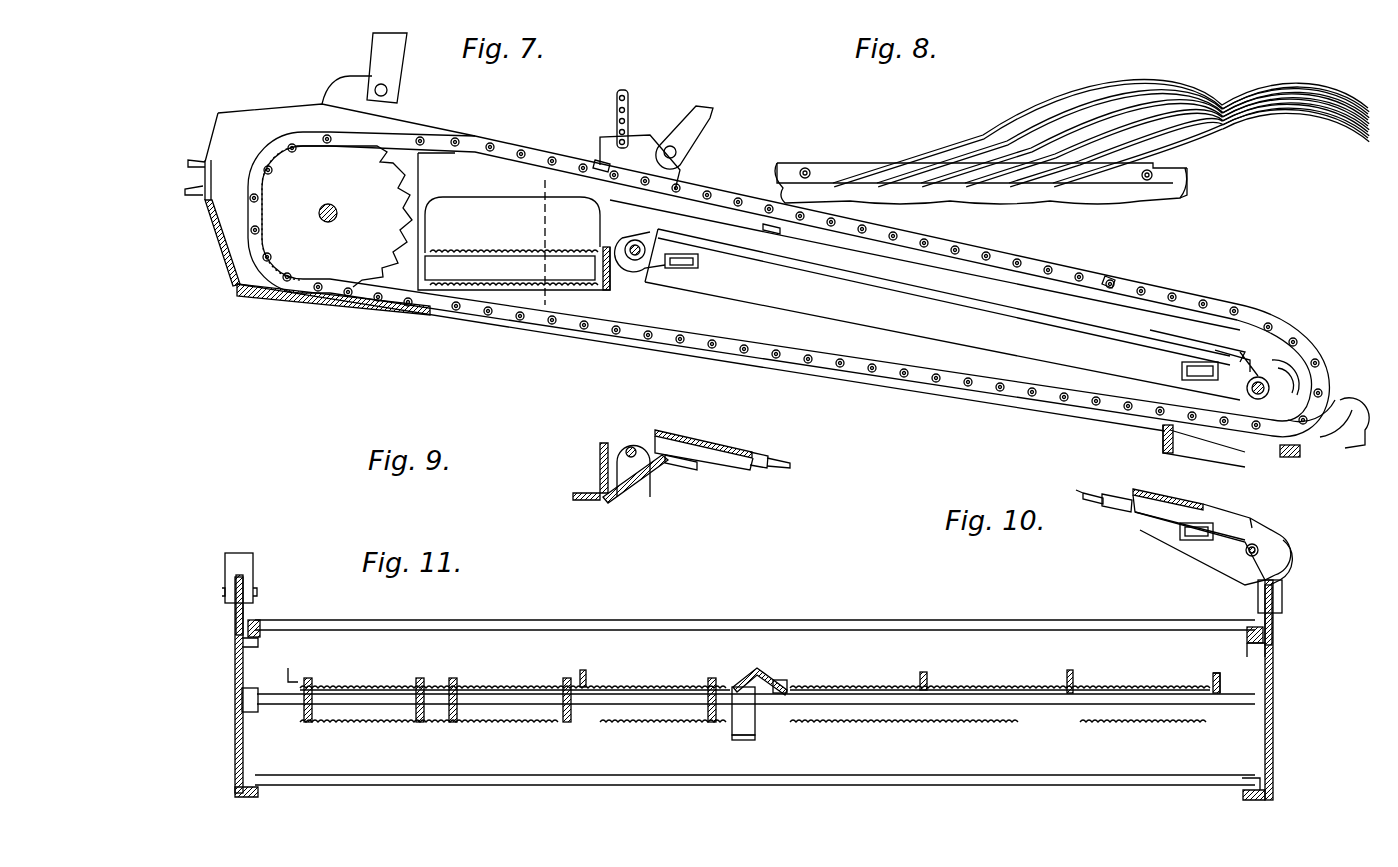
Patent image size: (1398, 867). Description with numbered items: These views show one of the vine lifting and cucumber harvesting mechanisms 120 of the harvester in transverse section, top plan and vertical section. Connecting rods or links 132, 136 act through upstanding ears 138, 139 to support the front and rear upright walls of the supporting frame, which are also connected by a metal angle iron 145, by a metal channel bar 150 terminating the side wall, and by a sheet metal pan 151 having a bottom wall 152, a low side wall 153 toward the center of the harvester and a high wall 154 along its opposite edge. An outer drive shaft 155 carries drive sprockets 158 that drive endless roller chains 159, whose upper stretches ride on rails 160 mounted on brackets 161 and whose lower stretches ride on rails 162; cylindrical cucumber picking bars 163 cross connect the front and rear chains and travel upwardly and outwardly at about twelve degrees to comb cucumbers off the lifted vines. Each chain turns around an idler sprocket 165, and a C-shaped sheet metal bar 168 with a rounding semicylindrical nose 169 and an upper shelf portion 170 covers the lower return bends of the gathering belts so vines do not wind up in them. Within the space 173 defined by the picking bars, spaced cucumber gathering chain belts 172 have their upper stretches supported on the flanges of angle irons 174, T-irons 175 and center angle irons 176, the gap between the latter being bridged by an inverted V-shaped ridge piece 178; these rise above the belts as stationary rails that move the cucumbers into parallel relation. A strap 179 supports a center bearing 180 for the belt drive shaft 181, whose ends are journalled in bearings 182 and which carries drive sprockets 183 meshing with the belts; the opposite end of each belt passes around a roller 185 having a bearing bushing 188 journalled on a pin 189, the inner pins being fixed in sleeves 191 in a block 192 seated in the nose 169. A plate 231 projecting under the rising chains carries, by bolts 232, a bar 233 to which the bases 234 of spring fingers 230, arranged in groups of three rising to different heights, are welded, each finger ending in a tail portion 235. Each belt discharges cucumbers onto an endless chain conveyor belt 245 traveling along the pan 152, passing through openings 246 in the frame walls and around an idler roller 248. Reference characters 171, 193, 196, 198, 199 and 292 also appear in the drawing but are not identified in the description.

In FIG. 7, the vine lifting and cucumber harvesting mechanism 120 is at (1190, 282).
In FIG. 8, the vine lifting and cucumber harvesting mechanism 120 is at (1192, 74).
In FIG. 9, the vine lifting and cucumber harvesting mechanism 120 is at (706, 510).
In FIG. 10, the vine lifting and cucumber harvesting mechanism 120 is at (1140, 540).
In FIG. 11, the vine lifting and cucumber harvesting mechanism 120 is at (678, 614).
In FIG. 7, the connecting rod or link 132 is at (705, 120).
In FIG. 7, the connecting rod or link 136 is at (400, 66).
In FIG. 11, the connecting rod or link 136 is at (238, 552).
In FIG. 7, the upstanding ear 138 is at (612, 138).
In FIG. 11, the upstanding ear 138 is at (1275, 620).
In FIG. 7, the upstanding ear 139 is at (350, 72).
In FIG. 7, the metal angle iron 145 is at (612, 285).
In FIG. 9, the metal angle iron 145 is at (598, 468).
In FIG. 7, the metal channel bar 150 is at (208, 173).
In FIG. 7, the sheet metal pan 151 is at (426, 241).
In FIG. 7, the bottom wall 152 is at (490, 260).
In FIG. 7, the low side wall 153 is at (640, 174).
In FIG. 7, the high wall 154 is at (420, 170).
In FIG. 7, the outer drive shaft 155 is at (340, 198).
In FIG. 7, the drive sprocket 158 is at (337, 216).
In FIG. 7, the endless roller chain 159 is at (810, 362).
In FIG. 11, the endless roller chain 159 is at (258, 620).
In FIG. 7, the rail 160 is at (865, 232).
In FIG. 11, the rail 160 is at (270, 632).
In FIG. 7, the bracket 161 is at (506, 170).
In FIG. 11, the bracket 161 is at (246, 645).
In FIG. 7, the rail 162 is at (878, 385).
In FIG. 7, the cylindrical cucumber picking bar 163 is at (518, 148).
In FIG. 11, the cylindrical cucumber picking bar 163 is at (832, 628).
In FIG. 7, the idler sprocket 165 is at (1265, 365).
In FIG. 7, the C-shaped sheet metal bar 168 is at (1300, 372).
In FIG. 10, the C-shaped sheet metal bar 168 is at (1300, 548).
In FIG. 7, the rounding semicylindrical nose 169 is at (1292, 400).
In FIG. 10, the rounding semicylindrical nose 169 is at (1292, 560).
In FIG. 7, the upper shelf portion 170 is at (1215, 345).
In FIG. 10, the upper shelf portion 170 is at (1272, 530).
In FIG. 11, the upper shelf portion 170 is at (1275, 738).
In FIG. 11, the end wall 171 is at (233, 746).
In FIG. 7, the cucumber gathering chain belt 172 is at (1035, 352).
In FIG. 9, the cucumber gathering chain belt 172 is at (795, 466).
In FIG. 10, the cucumber gathering chain belt 172 is at (1078, 492).
In FIG. 11, the cucumber gathering chain belt 172 is at (530, 724).
In FIG. 7, the space 173 is at (701, 220).
In FIG. 11, the space 173 is at (923, 672).
In FIG. 11, the angle iron 174 is at (298, 670).
In FIG. 7, the T-iron 175 is at (975, 302).
In FIG. 11, the T-iron 175 is at (585, 670).
In FIG. 9, the angle iron 176 is at (760, 462).
In FIG. 10, the angle iron 176 is at (1118, 495).
In FIG. 11, the angle iron 176 is at (732, 688).
In FIG. 9, the inverted V-shaped sheet metal ridge piece 178 is at (715, 445).
In FIG. 10, the inverted V-shaped sheet metal ridge piece 178 is at (1143, 490).
In FIG. 11, the inverted V-shaped sheet metal ridge piece 178 is at (762, 668).
In FIG. 9, the strap 179 is at (632, 486).
In FIG. 11, the strap 179 is at (748, 738).
In FIG. 9, the center bearing 180 is at (618, 443).
In FIG. 11, the center bearing 180 is at (732, 722).
In FIG. 7, the drive shaft 181 is at (638, 262).
In FIG. 9, the drive shaft 181 is at (634, 447).
In FIG. 11, the drive shaft 181 is at (585, 720).
In FIG. 11, the bearing 182 is at (255, 712).
In FIG. 7, the drive sprocket 183 is at (650, 255).
In FIG. 11, the drive sprocket 183 is at (455, 722).
In FIG. 7, the roller 185 is at (1268, 380).
In FIG. 10, the bearing bushing 188 is at (1240, 560).
In FIG. 10, the pin 189 is at (1250, 557).
In FIG. 7, the sleeve 191 is at (965, 272).
In FIG. 7, the block 192 is at (250, 98).
In FIG. 10, the block 192 is at (1218, 545).
In FIG. 11, the block 192 is at (232, 683).
In FIG. 7, the slide block 193 is at (1182, 364).
In FIG. 10, the slide block 193 is at (1195, 542).
In FIG. 7, the bracket 196 is at (1178, 452).
In FIG. 7, the bottom flange 198 is at (420, 326).
In FIG. 7, the spacer 199 is at (228, 290).
In FIG. 9, the spacer 199 is at (700, 468).
In FIG. 11, the spacer 199 is at (270, 688).
In FIG. 7, the spring finger 230 is at (1330, 445).
In FIG. 8, the spring finger 230 is at (1030, 100).
In FIG. 7, the plate 231 is at (1218, 458).
In FIG. 8, the bolt 232 is at (808, 168).
In FIG. 7, the bar 233 is at (1288, 457).
In FIG. 8, the bar 233 is at (1100, 190).
In FIG. 8, the base 234 is at (930, 180).
In FIG. 8, the tail portion 235 is at (1355, 125).
In FIG. 7, the endless chain conveyor belt 245 is at (512, 250).
In FIG. 7, the opening 246 is at (580, 205).
In FIG. 7, the idler roller 248 is at (514, 271).
In FIG. 7, the end plate 292 is at (1305, 455).